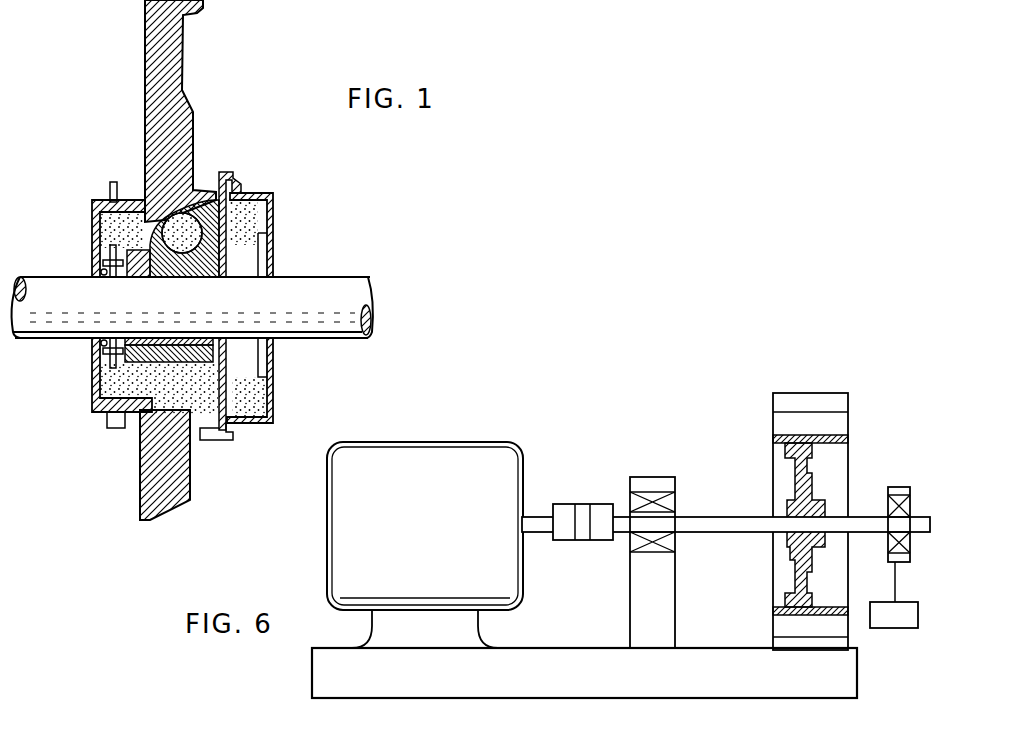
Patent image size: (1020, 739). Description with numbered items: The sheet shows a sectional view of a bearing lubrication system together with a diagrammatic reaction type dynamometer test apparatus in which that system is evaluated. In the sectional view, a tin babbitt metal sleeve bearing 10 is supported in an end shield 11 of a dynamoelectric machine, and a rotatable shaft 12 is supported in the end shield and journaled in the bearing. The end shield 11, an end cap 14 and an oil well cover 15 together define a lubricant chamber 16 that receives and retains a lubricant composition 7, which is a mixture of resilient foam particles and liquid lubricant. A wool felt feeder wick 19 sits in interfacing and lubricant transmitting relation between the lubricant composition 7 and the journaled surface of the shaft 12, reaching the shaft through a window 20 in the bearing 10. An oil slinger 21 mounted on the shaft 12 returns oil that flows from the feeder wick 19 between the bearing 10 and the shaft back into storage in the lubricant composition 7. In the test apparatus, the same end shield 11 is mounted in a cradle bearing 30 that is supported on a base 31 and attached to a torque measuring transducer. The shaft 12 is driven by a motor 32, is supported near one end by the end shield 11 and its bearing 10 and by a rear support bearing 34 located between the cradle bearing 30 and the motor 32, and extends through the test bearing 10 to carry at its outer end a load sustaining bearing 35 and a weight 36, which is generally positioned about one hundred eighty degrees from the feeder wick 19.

In FIG. 1, the lubricant composition 7 is at (270, 197).
In FIG. 1, the sleeve bearing 10 is at (195, 272).
In FIG. 1, the end shield 11 is at (172, 63).
In FIG. 6, the end shield 11 is at (818, 481).
In FIG. 1, the shaft 12 is at (320, 292).
In FIG. 6, the shaft 12 is at (698, 520).
In FIG. 1, the end cap 14 is at (92, 396).
In FIG. 1, the oil well cover 15 is at (275, 405).
In FIG. 1, the lubricant chamber 16 is at (120, 414).
In FIG. 1, the feeder wick 19 is at (213, 190).
In FIG. 1, the window 20 is at (152, 278).
In FIG. 1, the oil slinger 21 is at (105, 262).
In FIG. 6, the cradle bearing 30 is at (850, 442).
In FIG. 6, the base 31 is at (622, 688).
In FIG. 6, the motor 32 is at (440, 531).
In FIG. 6, the rear support bearing 34 is at (584, 497).
In FIG. 6, the load sustaining bearing 35 is at (910, 492).
In FIG. 6, the weight 36 is at (896, 628).